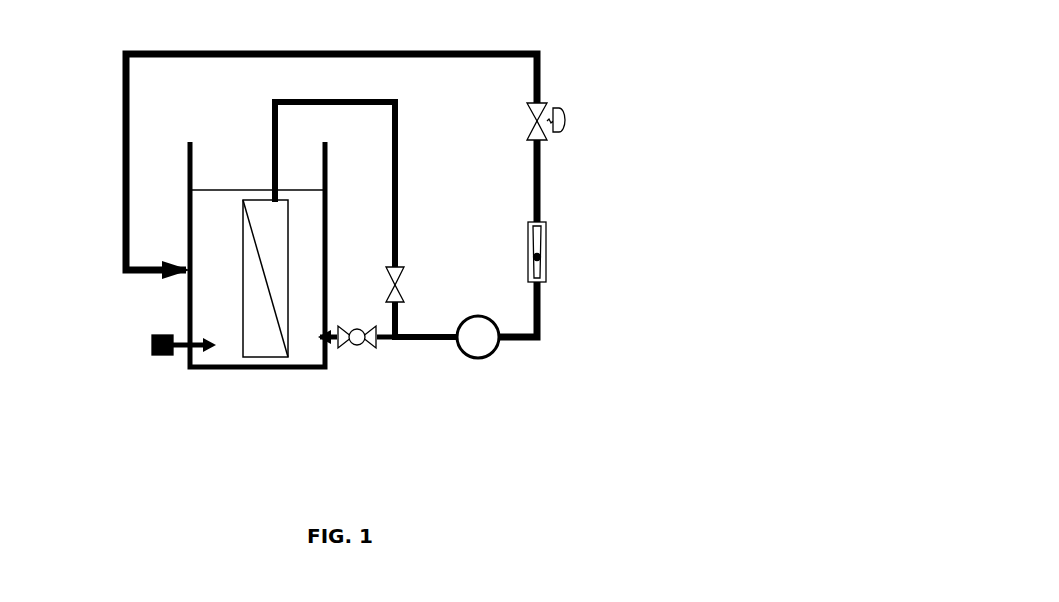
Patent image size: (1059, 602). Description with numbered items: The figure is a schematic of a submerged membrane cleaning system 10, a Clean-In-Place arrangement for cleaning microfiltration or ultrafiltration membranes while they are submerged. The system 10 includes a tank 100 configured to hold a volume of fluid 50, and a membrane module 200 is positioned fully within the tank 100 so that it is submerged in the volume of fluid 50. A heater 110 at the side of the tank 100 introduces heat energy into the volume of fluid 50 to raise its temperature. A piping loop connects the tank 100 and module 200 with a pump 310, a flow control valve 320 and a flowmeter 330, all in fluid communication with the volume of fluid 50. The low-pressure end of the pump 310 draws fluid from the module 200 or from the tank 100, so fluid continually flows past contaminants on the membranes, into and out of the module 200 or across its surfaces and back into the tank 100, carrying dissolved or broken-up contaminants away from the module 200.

The system 10 is at (620, 49).
The volume of fluid 50 is at (210, 189).
The tank 100 is at (186, 303).
The heater 110 is at (160, 360).
The module 200 is at (290, 360).
The pump 310 is at (492, 360).
The flow control valve 320 is at (570, 111).
The flowmeter 330 is at (552, 229).